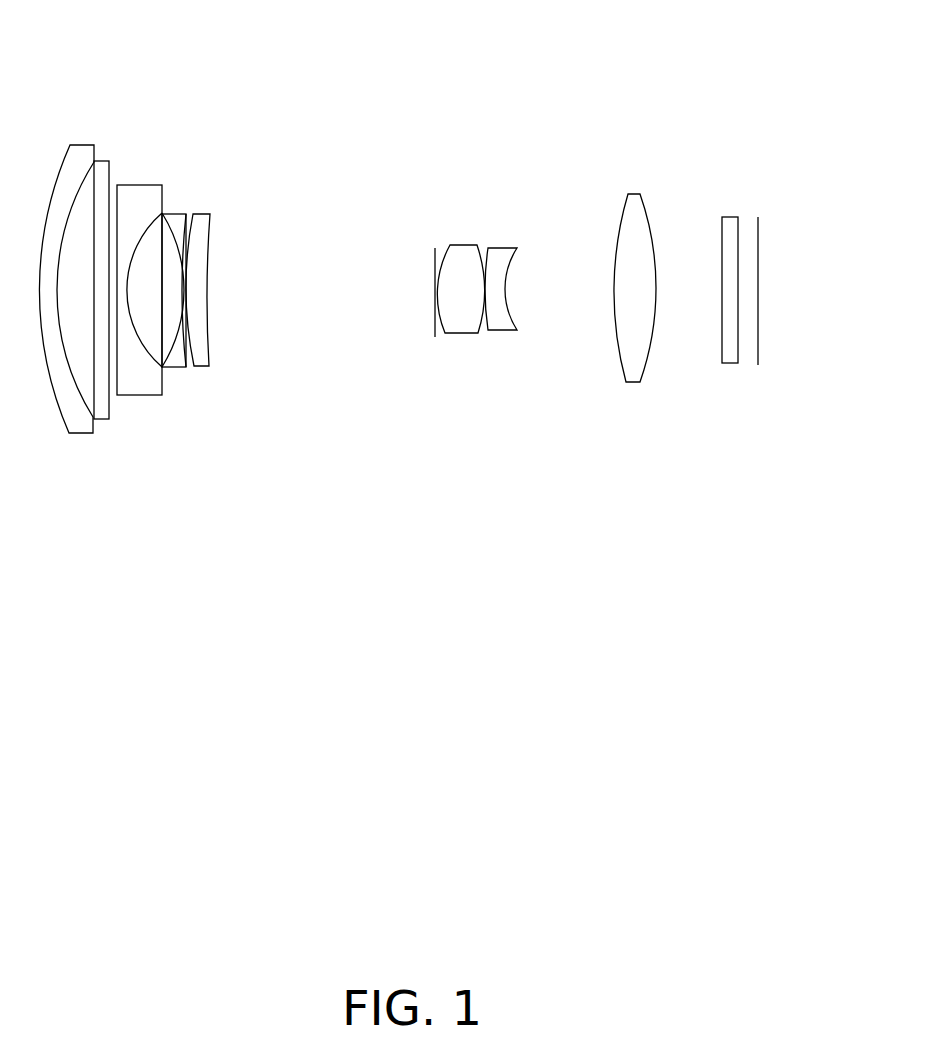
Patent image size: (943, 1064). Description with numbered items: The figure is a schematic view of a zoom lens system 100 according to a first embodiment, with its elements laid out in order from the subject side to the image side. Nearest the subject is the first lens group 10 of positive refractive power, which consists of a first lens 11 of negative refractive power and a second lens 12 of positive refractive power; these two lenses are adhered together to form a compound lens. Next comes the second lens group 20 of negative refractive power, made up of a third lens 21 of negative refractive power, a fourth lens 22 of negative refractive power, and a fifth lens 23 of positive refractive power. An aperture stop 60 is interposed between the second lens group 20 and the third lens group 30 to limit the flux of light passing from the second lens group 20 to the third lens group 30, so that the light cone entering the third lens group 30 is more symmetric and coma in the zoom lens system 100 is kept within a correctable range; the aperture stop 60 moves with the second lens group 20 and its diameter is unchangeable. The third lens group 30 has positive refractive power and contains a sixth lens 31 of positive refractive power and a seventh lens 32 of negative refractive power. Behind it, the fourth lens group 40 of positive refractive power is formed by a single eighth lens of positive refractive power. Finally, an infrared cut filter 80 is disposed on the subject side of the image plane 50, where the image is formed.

The zoom lens system 100 is at (370, 52).
The first lens group 10 is at (86, 343).
The first lens 11 is at (70, 411).
The second lens 12 is at (103, 403).
The second lens group 20 is at (195, 352).
The third lens 21 is at (137, 382).
The fourth lens 22 is at (177, 360).
The fifth lens 23 is at (202, 352).
The aperture stop 60 is at (433, 322).
The third lens group 30 is at (484, 345).
The sixth lens 31 is at (462, 330).
The seventh lens 32 is at (503, 325).
The fourth lens group 40 is at (633, 375).
The infrared cut filter 80 is at (732, 358).
The image plane 50 is at (758, 357).